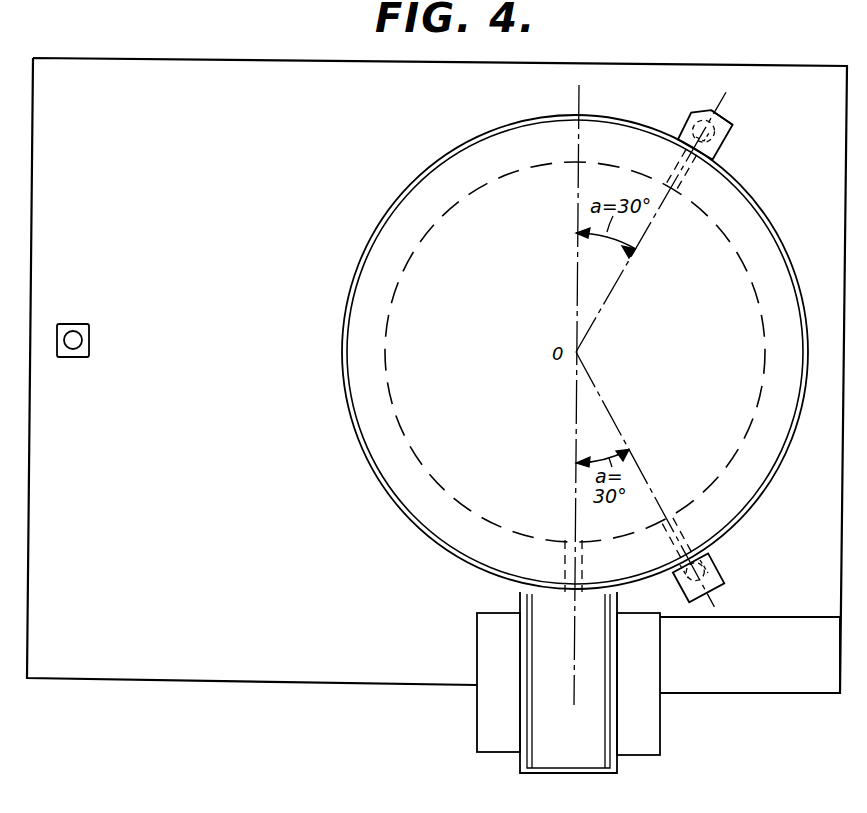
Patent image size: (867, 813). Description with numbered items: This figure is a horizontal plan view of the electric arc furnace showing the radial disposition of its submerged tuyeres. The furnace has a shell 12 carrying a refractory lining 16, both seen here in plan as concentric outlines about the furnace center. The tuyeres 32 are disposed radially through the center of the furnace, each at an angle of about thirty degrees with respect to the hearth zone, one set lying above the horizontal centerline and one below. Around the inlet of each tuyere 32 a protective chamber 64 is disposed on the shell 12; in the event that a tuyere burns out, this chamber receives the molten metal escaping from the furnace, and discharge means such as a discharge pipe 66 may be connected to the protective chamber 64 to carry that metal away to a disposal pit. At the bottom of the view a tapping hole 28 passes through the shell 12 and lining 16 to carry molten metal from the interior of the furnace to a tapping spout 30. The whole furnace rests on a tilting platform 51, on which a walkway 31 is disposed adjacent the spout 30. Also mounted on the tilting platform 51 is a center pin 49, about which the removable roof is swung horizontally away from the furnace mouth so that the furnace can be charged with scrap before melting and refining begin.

The shell 12 is at (371, 238).
The refractory lining 16 is at (756, 242).
The tapping hole 28 is at (584, 558).
The tapping spout 30 is at (585, 713).
The walkway 31 is at (730, 675).
The tuyeres 32 is at (720, 166).
The center pin 49 is at (73, 330).
The tilting platform 51 is at (246, 135).
The protective chamber 64 is at (688, 130).
The discharge pipe 66 is at (735, 125).